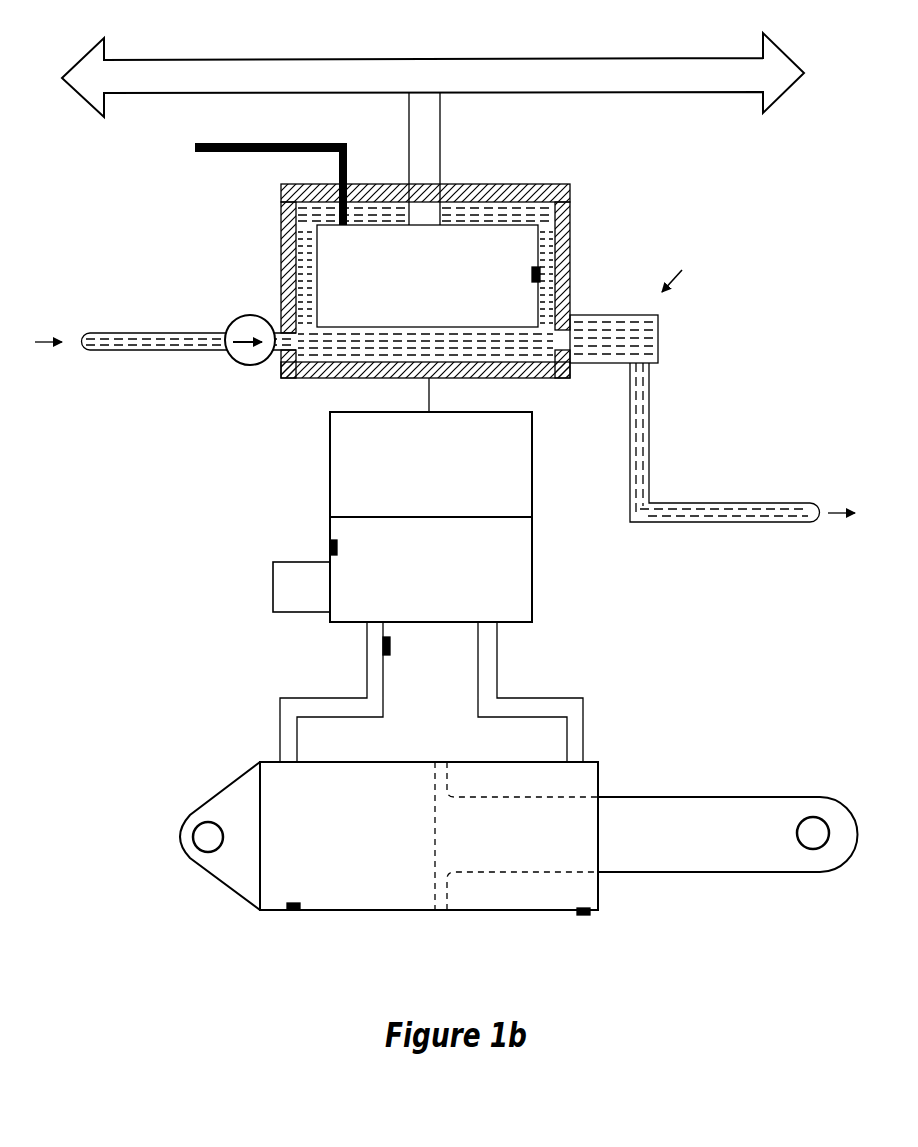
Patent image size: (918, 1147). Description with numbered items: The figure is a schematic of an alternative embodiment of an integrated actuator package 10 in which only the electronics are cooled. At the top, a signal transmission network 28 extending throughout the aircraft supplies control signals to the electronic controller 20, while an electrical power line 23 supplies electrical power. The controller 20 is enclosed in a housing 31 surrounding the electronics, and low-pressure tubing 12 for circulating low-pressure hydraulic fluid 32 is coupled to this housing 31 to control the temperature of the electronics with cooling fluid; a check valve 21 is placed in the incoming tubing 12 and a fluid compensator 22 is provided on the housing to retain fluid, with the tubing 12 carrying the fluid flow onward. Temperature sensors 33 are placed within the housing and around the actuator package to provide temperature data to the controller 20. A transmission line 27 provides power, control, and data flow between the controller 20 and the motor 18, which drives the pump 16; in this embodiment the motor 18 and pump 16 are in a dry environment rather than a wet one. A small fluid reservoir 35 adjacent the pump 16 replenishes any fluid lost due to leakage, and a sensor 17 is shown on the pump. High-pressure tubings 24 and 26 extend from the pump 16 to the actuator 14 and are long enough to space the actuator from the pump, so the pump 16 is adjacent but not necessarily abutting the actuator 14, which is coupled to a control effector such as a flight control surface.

The integrated actuator package 10 is at (172, 900).
The low-pressure tubing 12 is at (173, 351).
The actuator 14 is at (478, 912).
The pump 16 is at (533, 563).
The pump sensor 17 is at (330, 545).
The motor 18 is at (330, 452).
The electronic controller 20 is at (516, 190).
The check valve 21 is at (260, 315).
The fluid compensator 22 is at (658, 345).
The electrical power line 23 is at (207, 153).
The high-pressure supply line 24 is at (540, 698).
The high-pressure supply line 26 is at (327, 698).
The transmission line 27 is at (430, 395).
The signal transmission network 28 is at (597, 58).
The housing 31 is at (283, 231).
The low-pressure hydraulic fluid 32 is at (570, 210).
The temperature sensors 33 is at (541, 278).
The fluid reservoir 35 is at (273, 592).